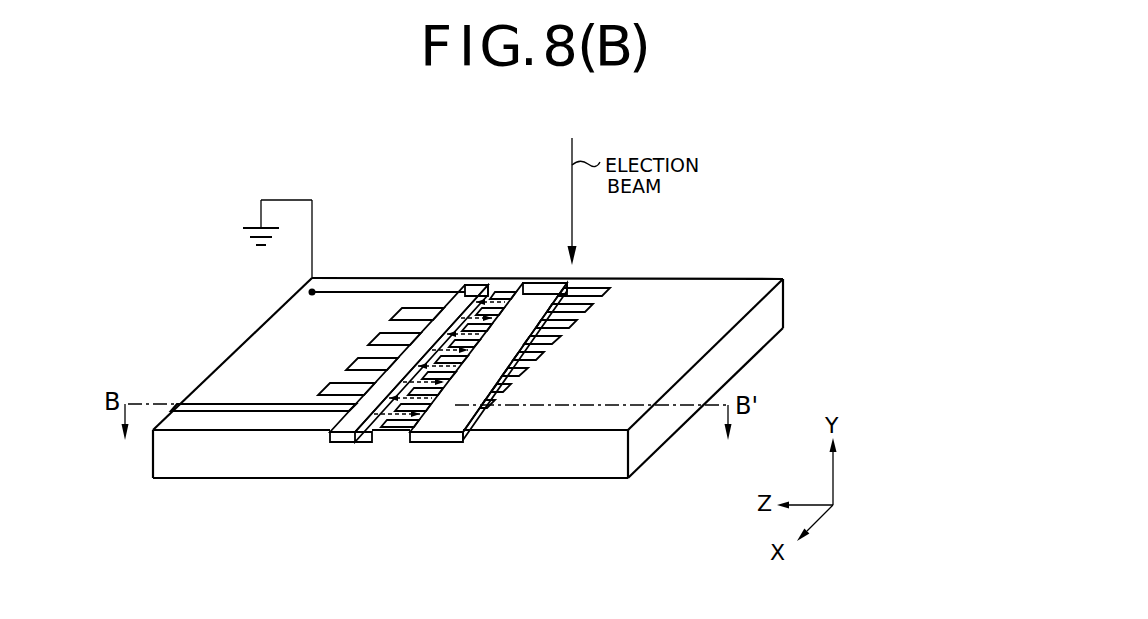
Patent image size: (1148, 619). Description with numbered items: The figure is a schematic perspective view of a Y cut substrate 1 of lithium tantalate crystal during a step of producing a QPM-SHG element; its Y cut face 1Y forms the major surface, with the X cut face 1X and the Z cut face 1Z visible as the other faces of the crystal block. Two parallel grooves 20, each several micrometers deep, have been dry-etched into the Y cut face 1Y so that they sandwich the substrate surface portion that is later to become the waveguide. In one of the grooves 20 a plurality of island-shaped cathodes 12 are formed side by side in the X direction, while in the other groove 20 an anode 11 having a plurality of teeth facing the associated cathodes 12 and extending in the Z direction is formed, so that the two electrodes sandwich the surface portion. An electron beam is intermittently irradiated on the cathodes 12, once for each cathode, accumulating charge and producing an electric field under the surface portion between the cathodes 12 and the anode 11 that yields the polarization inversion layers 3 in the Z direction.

The substrate 1 is at (512, 388).
The X cut face 1X is at (303, 475).
The Y cut face 1Y is at (664, 290).
The Z cut face 1Z is at (773, 348).
The polarization inversion layer 3 is at (518, 290).
The anode 11 is at (382, 292).
The cathode 12 is at (447, 420).
The parallel groove 20 is at (484, 270).